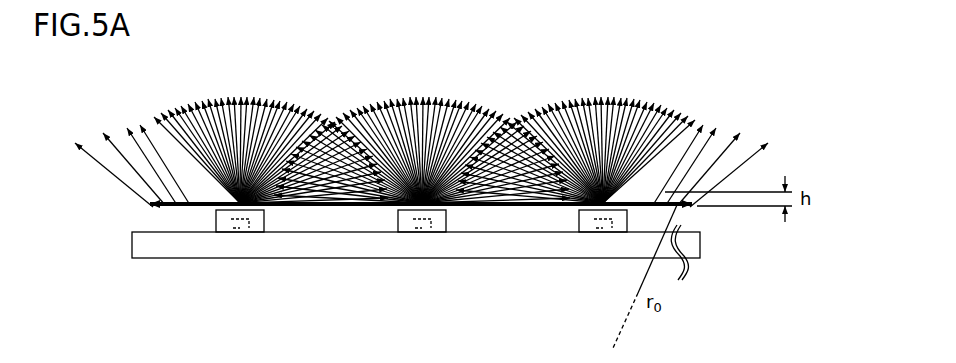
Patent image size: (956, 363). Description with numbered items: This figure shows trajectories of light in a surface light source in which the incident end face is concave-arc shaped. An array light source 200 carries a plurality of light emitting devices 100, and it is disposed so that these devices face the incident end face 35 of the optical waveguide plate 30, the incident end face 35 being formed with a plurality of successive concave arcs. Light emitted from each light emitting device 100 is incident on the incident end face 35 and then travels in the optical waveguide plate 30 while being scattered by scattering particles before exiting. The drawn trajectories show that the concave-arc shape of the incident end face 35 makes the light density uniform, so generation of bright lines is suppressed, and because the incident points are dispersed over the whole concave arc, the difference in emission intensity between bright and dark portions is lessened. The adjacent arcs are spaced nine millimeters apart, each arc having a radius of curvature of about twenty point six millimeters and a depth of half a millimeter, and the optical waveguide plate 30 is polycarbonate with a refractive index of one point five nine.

The optical waveguide plate 30 is at (720, 107).
The incident end face 35 is at (157, 203).
The light emitting device 100 is at (225, 214).
The array light source 200 is at (104, 236).